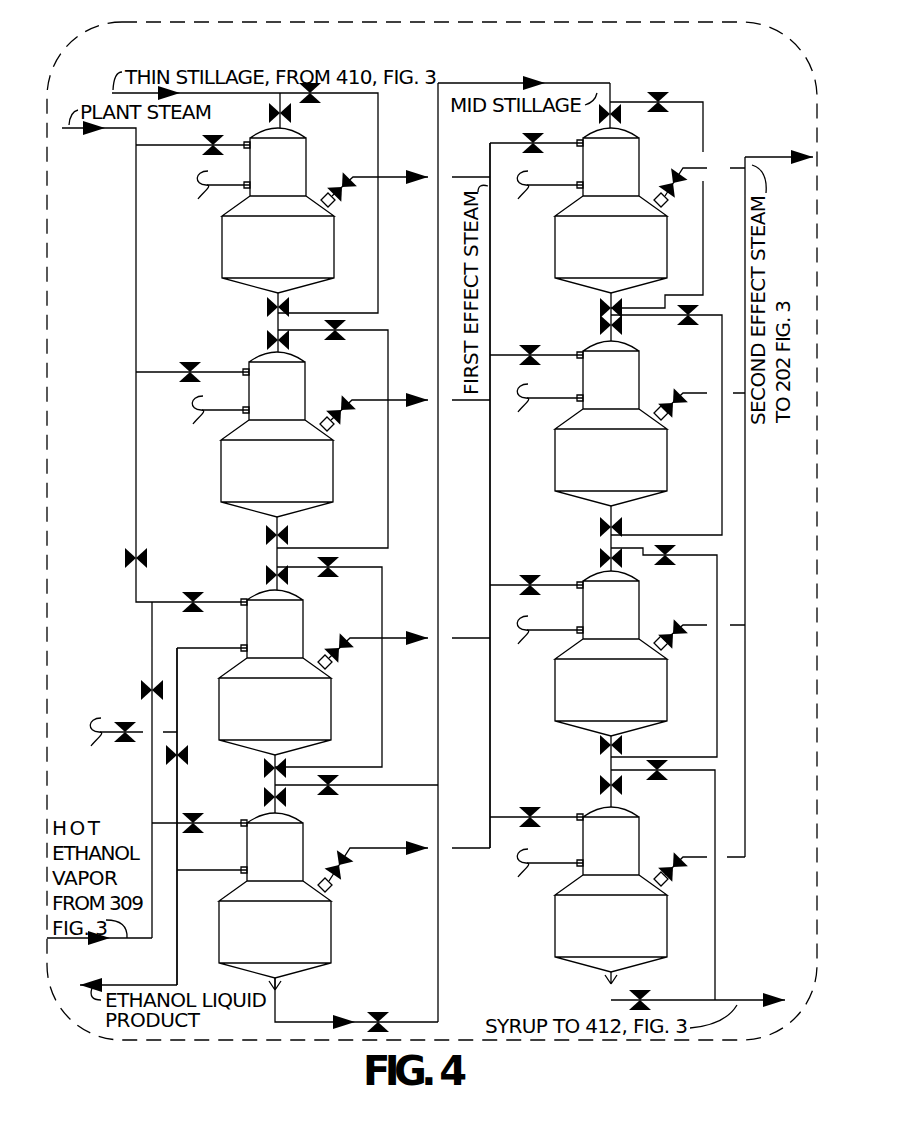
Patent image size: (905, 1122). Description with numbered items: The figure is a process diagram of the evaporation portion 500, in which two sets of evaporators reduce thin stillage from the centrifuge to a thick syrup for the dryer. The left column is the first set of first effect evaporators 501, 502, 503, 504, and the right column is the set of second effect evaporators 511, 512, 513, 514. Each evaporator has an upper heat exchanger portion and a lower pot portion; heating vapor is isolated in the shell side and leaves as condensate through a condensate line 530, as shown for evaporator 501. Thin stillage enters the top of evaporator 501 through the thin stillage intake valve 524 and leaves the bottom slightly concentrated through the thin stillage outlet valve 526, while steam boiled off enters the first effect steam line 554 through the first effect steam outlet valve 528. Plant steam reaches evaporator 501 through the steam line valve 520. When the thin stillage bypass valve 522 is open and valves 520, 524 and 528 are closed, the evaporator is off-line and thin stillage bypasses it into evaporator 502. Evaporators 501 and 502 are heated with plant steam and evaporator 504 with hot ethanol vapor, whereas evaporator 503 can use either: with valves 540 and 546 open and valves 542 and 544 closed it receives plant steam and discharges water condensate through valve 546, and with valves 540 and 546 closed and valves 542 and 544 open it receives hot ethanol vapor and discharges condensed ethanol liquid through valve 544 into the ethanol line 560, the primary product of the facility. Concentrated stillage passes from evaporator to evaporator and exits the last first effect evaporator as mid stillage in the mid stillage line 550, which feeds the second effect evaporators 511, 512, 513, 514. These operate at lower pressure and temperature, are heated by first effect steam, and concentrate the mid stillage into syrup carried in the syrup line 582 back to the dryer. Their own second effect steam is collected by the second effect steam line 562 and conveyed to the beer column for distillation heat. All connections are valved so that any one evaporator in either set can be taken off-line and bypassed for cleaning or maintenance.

The evaporation portion 500 is at (550, 51).
The first effect evaporator 501 is at (261, 260).
The first effect evaporator 502 is at (260, 484).
The first effect evaporator 503 is at (258, 722).
The first effect evaporator 504 is at (258, 945).
The second effect evaporator 511 is at (594, 260).
The second effect evaporator 512 is at (594, 473).
The second effect evaporator 513 is at (594, 703).
The second effect evaporator 514 is at (594, 939).
The steam line valve 520 is at (213, 134).
The thin stillage bypass valve 522 is at (321, 95).
The thin stillage intake valve 524 is at (291, 114).
The thin stillage outlet valve 526 is at (265, 307).
The first effect steam outlet valve 528 is at (346, 180).
The condensate line 530 is at (203, 182).
The valve 540 is at (147, 556).
The valve 542 is at (141, 688).
The valve 544 is at (188, 757).
The valve 546 is at (125, 722).
The mid stillage line 550 is at (438, 120).
The first effect steam line 554 is at (491, 480).
The ethanol line 560 is at (177, 928).
The second effect steam line 562 is at (782, 152).
The syrup line 582 is at (725, 1000).